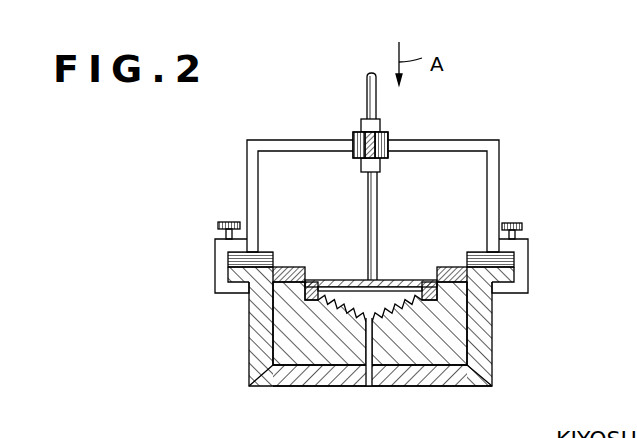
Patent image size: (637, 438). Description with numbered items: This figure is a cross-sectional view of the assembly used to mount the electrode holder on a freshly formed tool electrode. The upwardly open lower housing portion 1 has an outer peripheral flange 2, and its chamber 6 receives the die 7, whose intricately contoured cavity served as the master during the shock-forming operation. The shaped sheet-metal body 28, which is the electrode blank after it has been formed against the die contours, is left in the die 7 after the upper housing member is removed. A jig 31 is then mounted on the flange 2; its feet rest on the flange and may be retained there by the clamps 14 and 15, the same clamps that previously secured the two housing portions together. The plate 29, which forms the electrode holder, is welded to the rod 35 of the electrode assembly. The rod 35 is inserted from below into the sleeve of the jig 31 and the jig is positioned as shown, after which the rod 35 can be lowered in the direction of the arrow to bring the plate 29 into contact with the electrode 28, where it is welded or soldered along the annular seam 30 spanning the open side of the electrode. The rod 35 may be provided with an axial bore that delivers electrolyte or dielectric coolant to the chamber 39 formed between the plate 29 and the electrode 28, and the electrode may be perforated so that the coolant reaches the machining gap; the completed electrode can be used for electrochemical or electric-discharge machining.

The lower housing portion 1 is at (478, 357).
The outer peripheral flange 2 is at (500, 277).
The chamber 6 is at (468, 345).
The die 7 is at (300, 352).
The clamp 14 is at (522, 273).
The clamp 15 is at (222, 271).
The shaped sheet-metal body 28 is at (330, 297).
The plate 29 is at (333, 280).
The annular seam 30 is at (428, 280).
The jig 31 is at (392, 133).
The rod 35 is at (367, 90).
The chamber 39 is at (385, 300).